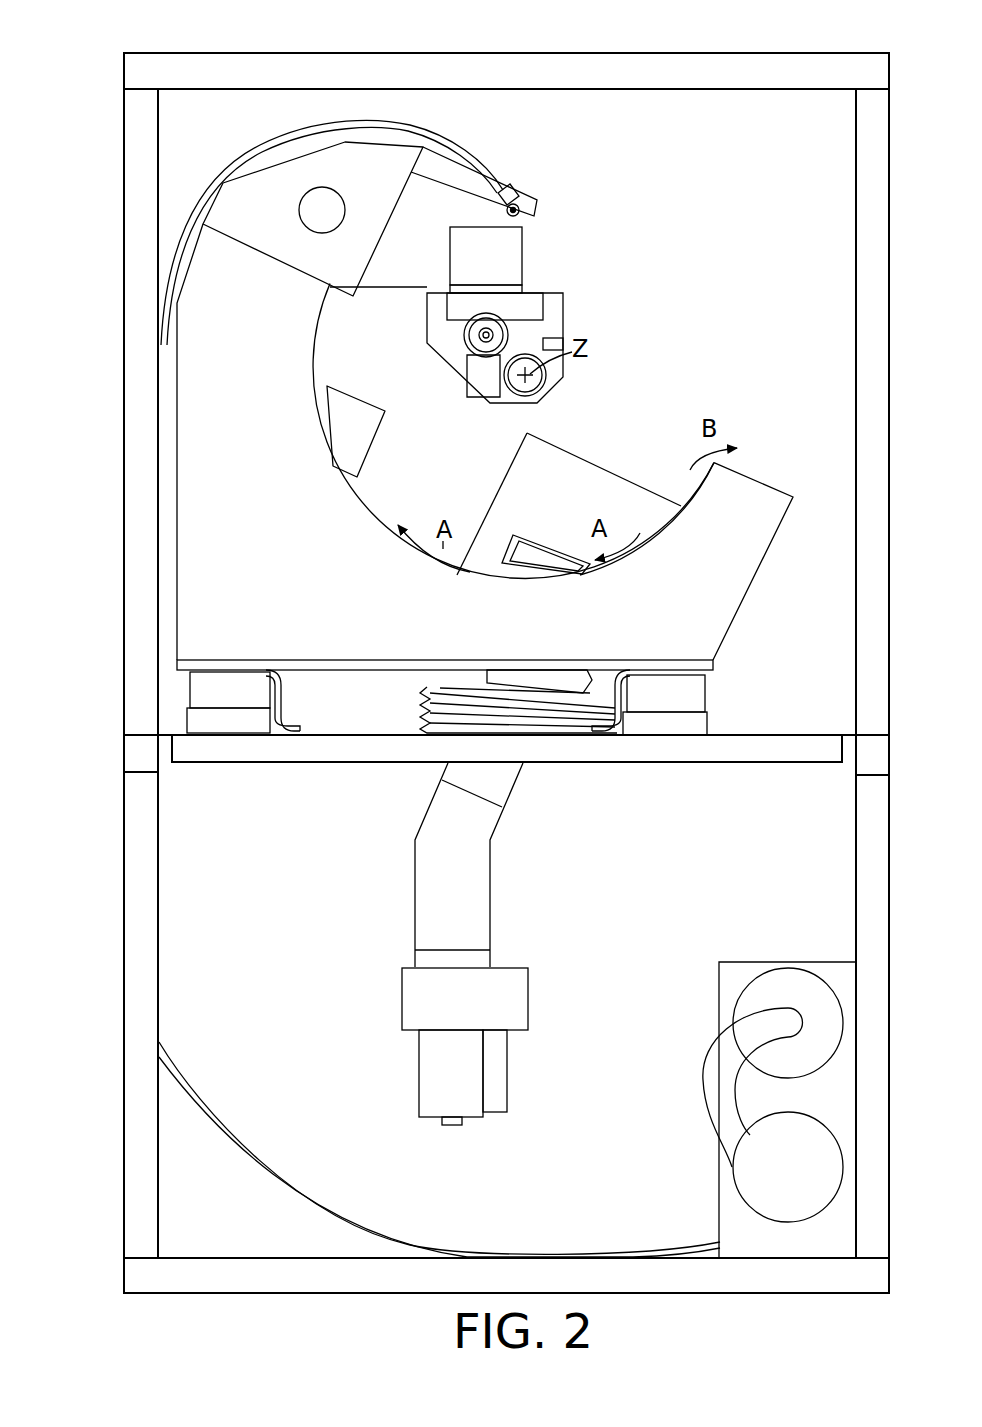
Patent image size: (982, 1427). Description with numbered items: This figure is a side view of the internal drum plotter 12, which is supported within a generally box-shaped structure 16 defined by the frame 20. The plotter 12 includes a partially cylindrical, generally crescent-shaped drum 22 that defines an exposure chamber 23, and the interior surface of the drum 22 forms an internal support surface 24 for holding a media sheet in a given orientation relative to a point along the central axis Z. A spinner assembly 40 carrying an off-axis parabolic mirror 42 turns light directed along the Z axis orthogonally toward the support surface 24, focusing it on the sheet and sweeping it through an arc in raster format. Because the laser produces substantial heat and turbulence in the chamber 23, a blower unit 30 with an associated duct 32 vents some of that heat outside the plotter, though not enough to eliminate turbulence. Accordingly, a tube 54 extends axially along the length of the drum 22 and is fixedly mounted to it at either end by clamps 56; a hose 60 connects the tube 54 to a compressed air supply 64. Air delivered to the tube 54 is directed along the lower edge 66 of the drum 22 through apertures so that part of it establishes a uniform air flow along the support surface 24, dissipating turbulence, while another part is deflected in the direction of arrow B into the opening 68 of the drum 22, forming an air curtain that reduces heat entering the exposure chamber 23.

The internal drum plotter 12 is at (478, 50).
The box-shaped structure 16 is at (112, 218).
The frame 20 is at (641, 53).
The drum 22 is at (280, 584).
The exposure chamber 23 is at (455, 465).
The internal support surface 24 is at (440, 558).
The blower unit 30 is at (600, 466).
The duct 32 is at (492, 913).
The spinner assembly 40 is at (568, 388).
The off-axis parabolic mirror 42 is at (535, 403).
The tube 54 is at (521, 219).
The clamp 56 is at (524, 193).
The hose 60 is at (262, 141).
The compressed air supply 64 is at (719, 1003).
The lower edge 66 is at (680, 513).
The opening 68 is at (641, 303).